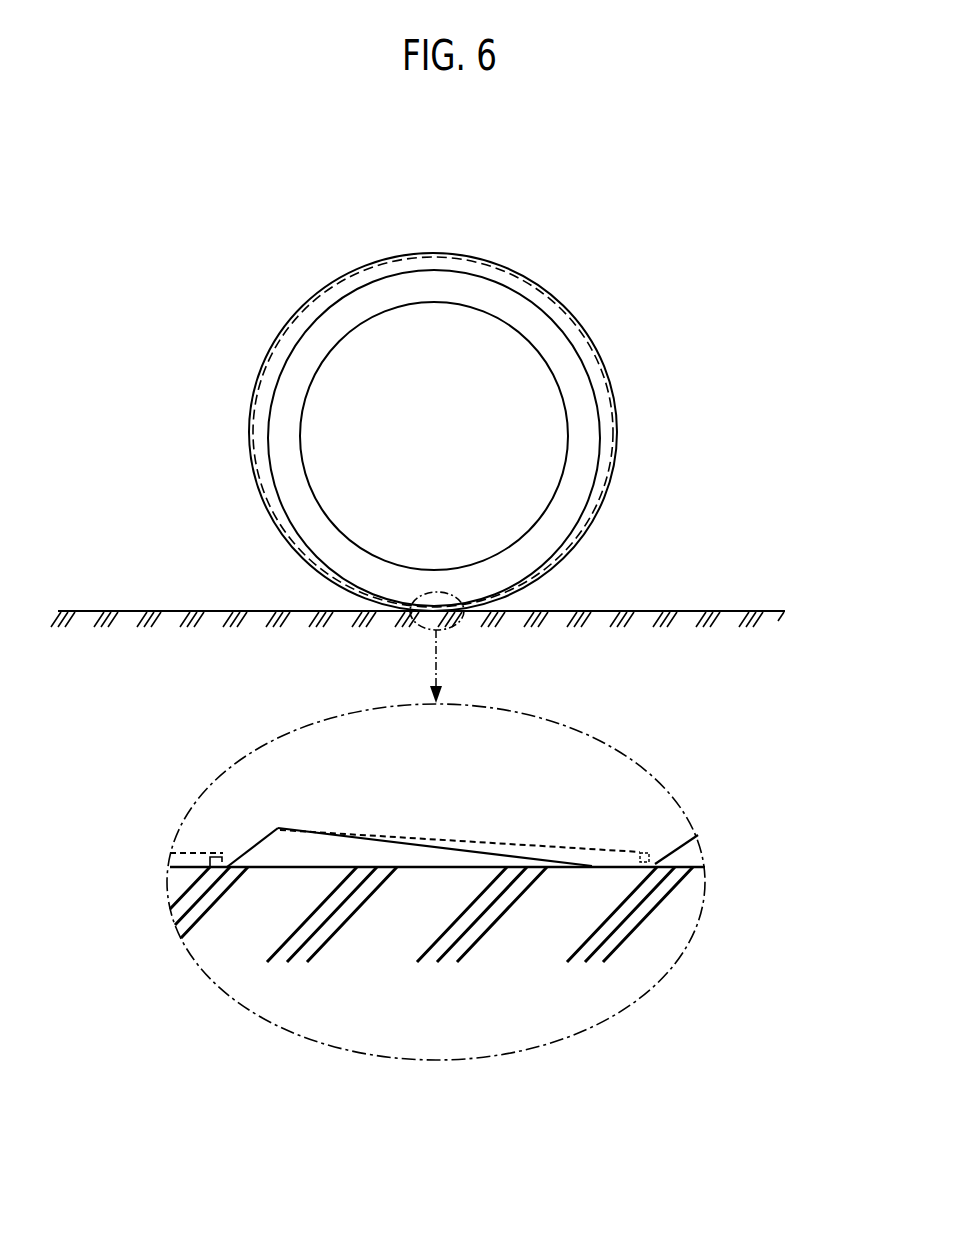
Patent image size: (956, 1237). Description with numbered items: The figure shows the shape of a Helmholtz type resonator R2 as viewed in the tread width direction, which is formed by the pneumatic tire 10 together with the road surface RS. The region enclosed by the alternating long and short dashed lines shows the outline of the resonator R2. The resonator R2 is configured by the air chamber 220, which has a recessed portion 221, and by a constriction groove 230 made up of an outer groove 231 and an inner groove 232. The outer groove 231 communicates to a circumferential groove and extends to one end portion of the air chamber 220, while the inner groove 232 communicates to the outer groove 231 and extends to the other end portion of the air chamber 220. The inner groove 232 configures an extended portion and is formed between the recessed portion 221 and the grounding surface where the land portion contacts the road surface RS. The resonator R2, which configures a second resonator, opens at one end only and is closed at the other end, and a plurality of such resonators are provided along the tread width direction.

The pneumatic tire 10 is at (576, 278).
The road surface RS is at (687, 609).
The air chamber 220 is at (409, 882).
The recessed portion 221 is at (310, 853).
The constriction groove 230 is at (506, 811).
The outer groove 231 is at (645, 856).
The inner groove 232 is at (590, 848).
The Helmholtz type resonator R2 is at (299, 887).